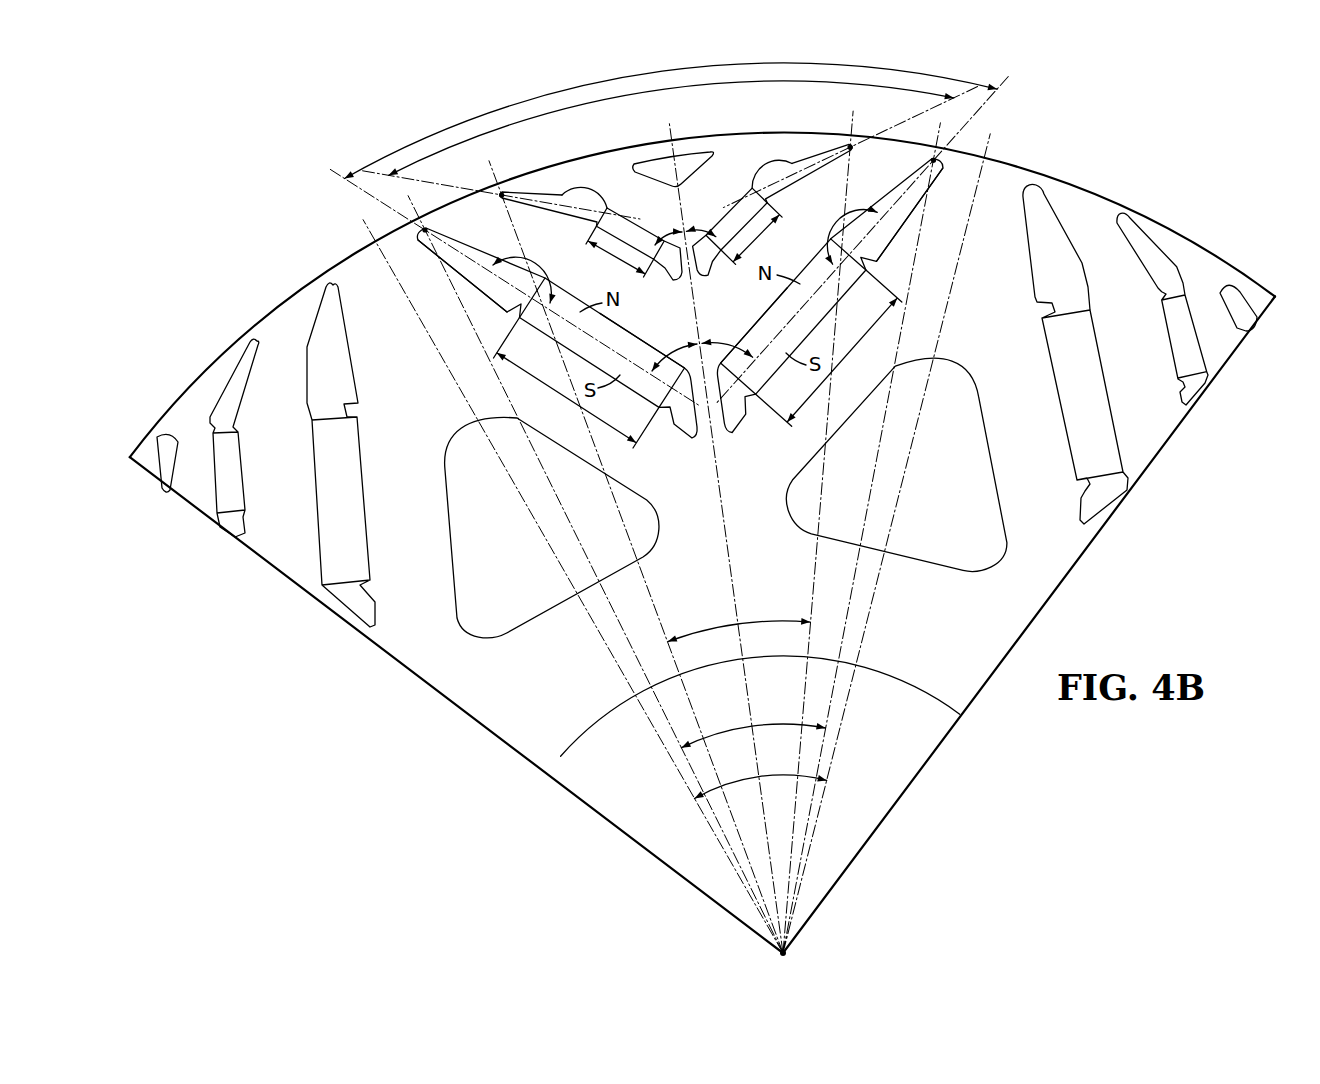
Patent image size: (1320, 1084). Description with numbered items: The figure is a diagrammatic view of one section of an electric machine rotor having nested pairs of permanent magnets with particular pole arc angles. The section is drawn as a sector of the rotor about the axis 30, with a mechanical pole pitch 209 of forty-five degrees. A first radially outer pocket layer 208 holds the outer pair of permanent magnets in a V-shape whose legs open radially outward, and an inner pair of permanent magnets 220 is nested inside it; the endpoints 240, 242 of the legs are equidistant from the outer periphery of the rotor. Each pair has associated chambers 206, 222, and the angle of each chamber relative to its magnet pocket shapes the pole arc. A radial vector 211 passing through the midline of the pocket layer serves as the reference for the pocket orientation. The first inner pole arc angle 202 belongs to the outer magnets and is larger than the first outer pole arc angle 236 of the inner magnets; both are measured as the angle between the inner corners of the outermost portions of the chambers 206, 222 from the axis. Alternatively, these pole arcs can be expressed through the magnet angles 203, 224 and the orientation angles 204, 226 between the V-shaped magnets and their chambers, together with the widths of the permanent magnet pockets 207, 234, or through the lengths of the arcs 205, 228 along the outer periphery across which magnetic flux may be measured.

The axis 30 is at (788, 955).
The first inner pole arc angle 202 is at (830, 726).
The magnet angle 203 is at (654, 350).
The orientation angle 204 is at (522, 256).
The arc 205 is at (612, 78).
The chamber 206 is at (472, 283).
The width of the permanent magnet pocket 207 is at (590, 418).
The first radially outer pocket layer 208 is at (627, 326).
The mechanical pole pitch 209 is at (777, 773).
The radial vector 211 is at (722, 505).
The inner pair of permanent magnets 220 is at (612, 194).
The chamber 222 is at (505, 188).
The magnet angle 224 is at (660, 233).
The orientation angle 226 is at (585, 184).
The arc 228 is at (525, 118).
The width of the permanent magnet pocket 234 is at (616, 256).
The first outer pole arc angle 236 is at (750, 621).
The endpoint 240 is at (424, 229).
The endpoint 242 is at (500, 197).